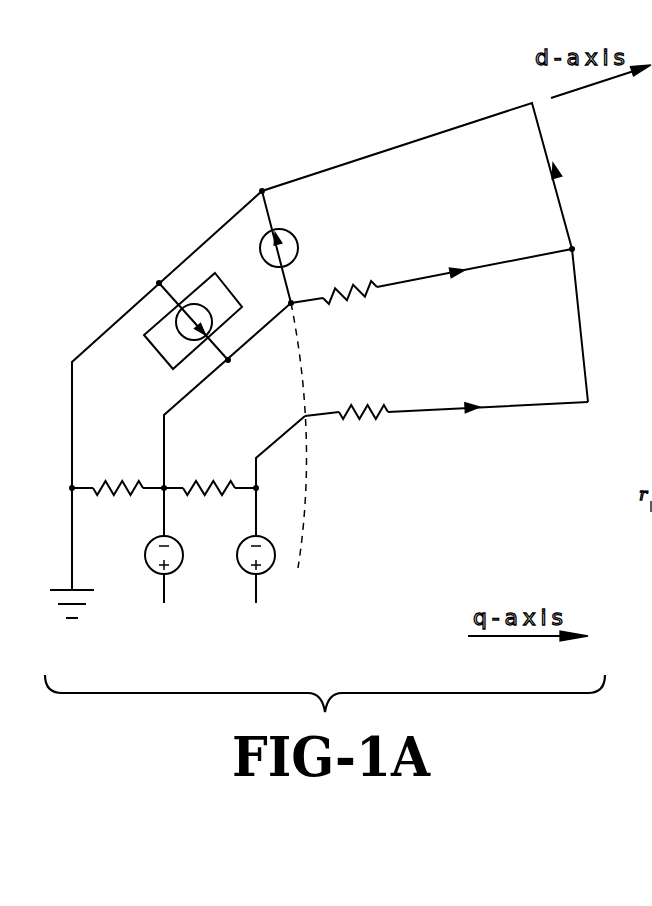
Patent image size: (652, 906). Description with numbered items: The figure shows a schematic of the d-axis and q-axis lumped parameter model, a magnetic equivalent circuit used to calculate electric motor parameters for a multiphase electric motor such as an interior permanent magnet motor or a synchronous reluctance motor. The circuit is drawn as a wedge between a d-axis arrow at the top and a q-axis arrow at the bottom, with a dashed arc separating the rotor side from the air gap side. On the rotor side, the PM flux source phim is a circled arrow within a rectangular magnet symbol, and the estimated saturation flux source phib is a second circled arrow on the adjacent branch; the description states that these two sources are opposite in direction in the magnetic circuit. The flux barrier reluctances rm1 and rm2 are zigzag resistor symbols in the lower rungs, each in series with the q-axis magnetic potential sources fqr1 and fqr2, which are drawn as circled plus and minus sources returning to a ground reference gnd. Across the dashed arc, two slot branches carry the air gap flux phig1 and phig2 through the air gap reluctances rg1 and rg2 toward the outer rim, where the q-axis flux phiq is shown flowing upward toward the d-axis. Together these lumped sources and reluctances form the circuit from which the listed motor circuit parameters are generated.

The PM flux source phim is at (176, 309).
The estimated saturation flux source phib is at (294, 236).
The q-axis flux phiq is at (576, 174).
The air gap flux phig1 is at (473, 382).
The air gap flux phig2 is at (454, 250).
The air gap reluctance rg1 is at (446, 431).
The air gap reluctance rg2 is at (431, 295).
The flux barrier reluctance rm1 is at (210, 467).
The flux barrier reluctance rm2 is at (118, 467).
The q-axis magnetic potential fqr1 is at (235, 550).
The q-axis magnetic potential fqr2 is at (141, 550).
The ground reference gnd is at (72, 604).